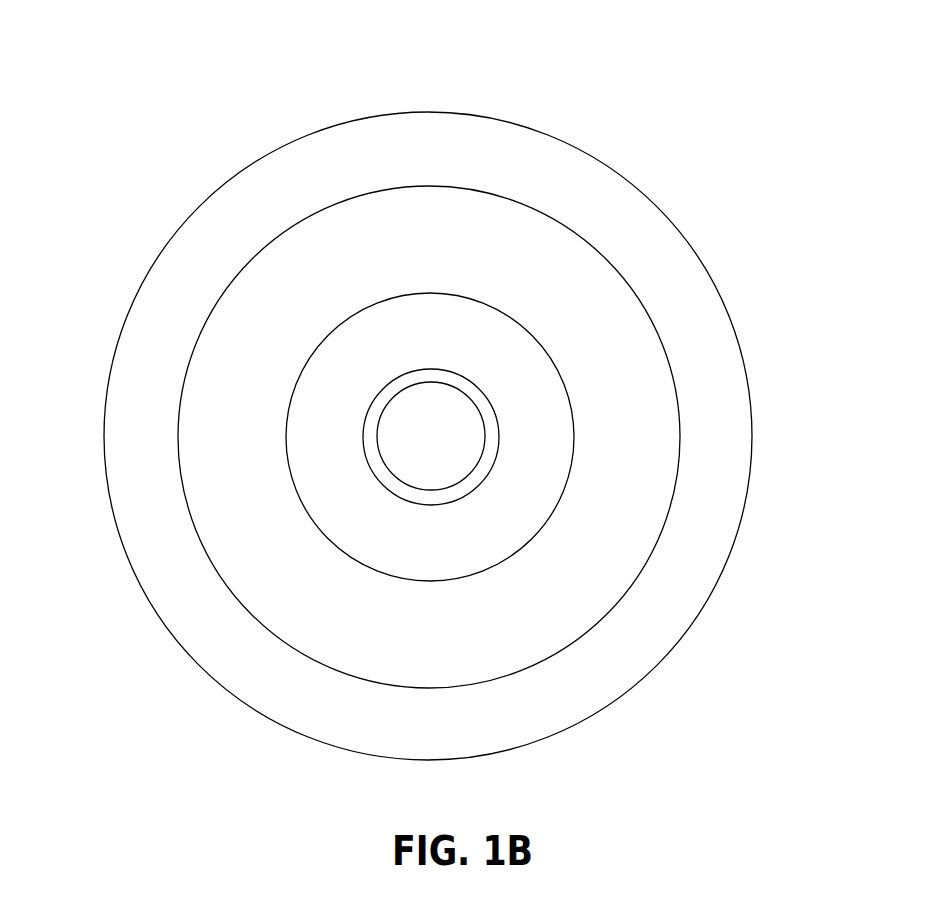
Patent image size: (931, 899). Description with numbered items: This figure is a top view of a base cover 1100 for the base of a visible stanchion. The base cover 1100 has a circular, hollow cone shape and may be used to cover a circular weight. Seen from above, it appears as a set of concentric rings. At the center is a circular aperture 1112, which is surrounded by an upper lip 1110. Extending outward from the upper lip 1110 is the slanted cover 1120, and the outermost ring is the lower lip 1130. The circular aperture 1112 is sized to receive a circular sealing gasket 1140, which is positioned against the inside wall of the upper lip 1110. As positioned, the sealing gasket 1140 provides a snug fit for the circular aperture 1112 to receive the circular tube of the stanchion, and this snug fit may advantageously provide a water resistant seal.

The base cover 1100 is at (165, 82).
The upper lip 1110 is at (380, 386).
The circular aperture 1112 is at (412, 455).
The slanted cover 1120 is at (627, 212).
The lower lip 1130 is at (725, 287).
The sealing gasket 1140 is at (487, 425).